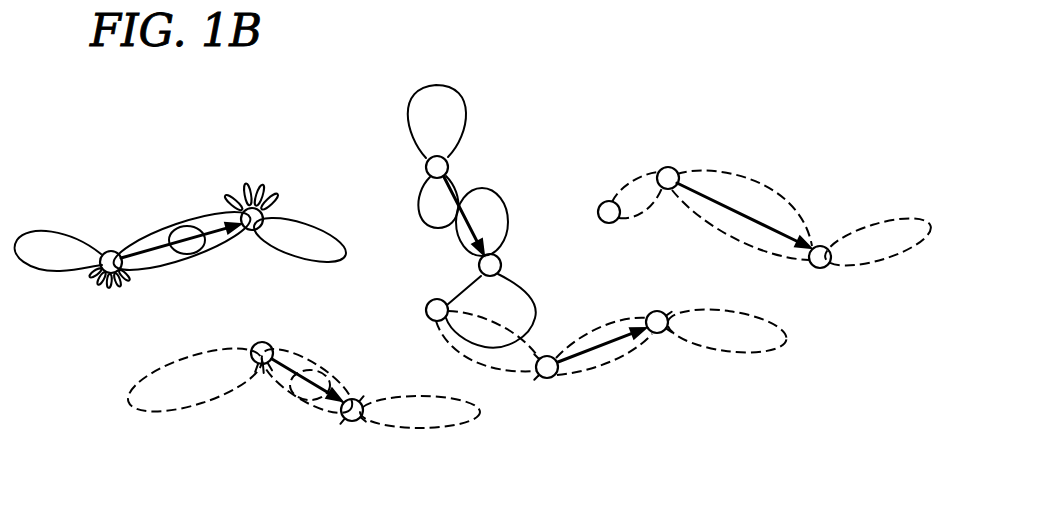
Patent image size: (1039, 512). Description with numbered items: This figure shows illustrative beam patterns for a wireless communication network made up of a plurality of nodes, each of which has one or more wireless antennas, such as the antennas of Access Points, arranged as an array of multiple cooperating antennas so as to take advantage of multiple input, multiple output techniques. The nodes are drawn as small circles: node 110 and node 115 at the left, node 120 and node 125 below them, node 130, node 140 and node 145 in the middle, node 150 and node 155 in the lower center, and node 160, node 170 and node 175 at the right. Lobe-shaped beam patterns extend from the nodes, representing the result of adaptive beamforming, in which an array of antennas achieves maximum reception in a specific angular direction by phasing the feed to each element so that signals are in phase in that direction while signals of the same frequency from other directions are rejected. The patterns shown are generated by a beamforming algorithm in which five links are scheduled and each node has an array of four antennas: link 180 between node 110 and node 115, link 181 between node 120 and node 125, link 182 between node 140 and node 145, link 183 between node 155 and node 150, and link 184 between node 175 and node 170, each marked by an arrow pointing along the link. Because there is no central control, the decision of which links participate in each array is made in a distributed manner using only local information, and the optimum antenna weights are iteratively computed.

The node 110 is at (109, 250).
The node 115 is at (253, 231).
The node 120 is at (258, 366).
The node 125 is at (352, 422).
The node 130 is at (426, 309).
The node 140 is at (426, 167).
The node 145 is at (502, 264).
The node 150 is at (656, 311).
The node 155 is at (548, 379).
The node 160 is at (605, 200).
The node 170 is at (823, 245).
The node 175 is at (668, 166).
The link 180 is at (187, 226).
The link 181 is at (320, 372).
The link 182 is at (465, 208).
The link 183 is at (597, 346).
The link 184 is at (745, 212).